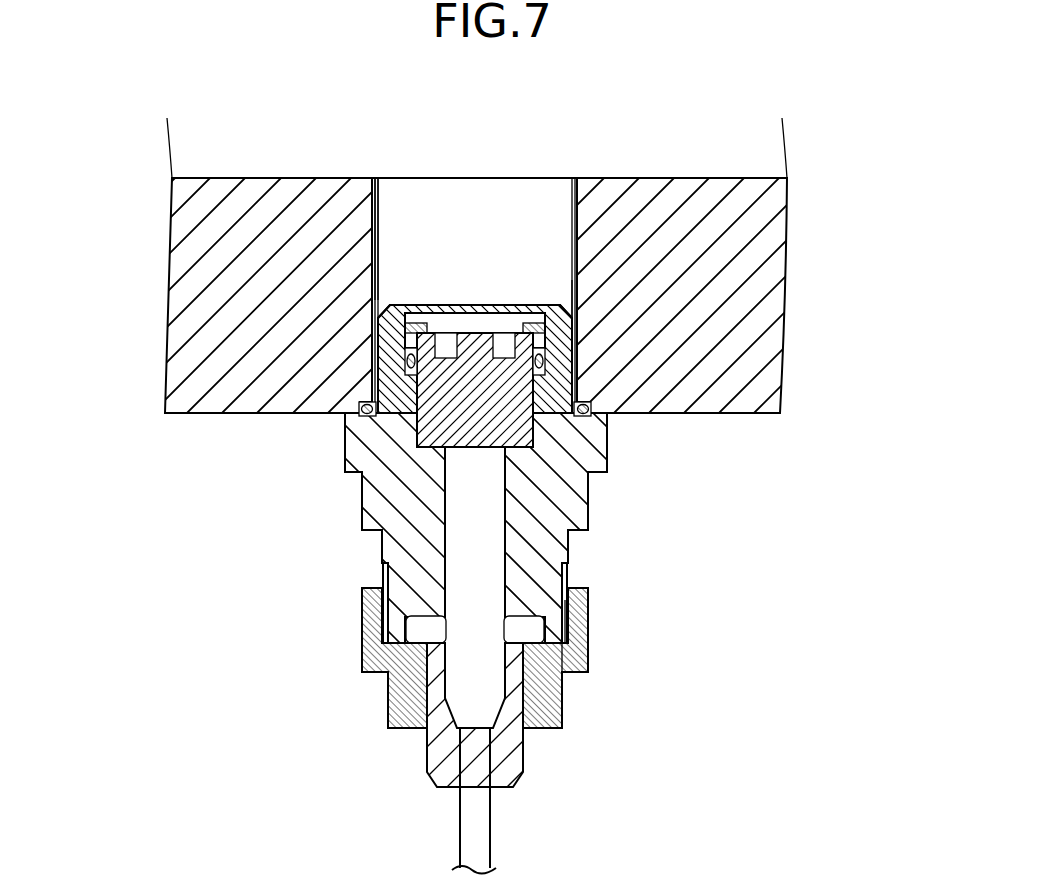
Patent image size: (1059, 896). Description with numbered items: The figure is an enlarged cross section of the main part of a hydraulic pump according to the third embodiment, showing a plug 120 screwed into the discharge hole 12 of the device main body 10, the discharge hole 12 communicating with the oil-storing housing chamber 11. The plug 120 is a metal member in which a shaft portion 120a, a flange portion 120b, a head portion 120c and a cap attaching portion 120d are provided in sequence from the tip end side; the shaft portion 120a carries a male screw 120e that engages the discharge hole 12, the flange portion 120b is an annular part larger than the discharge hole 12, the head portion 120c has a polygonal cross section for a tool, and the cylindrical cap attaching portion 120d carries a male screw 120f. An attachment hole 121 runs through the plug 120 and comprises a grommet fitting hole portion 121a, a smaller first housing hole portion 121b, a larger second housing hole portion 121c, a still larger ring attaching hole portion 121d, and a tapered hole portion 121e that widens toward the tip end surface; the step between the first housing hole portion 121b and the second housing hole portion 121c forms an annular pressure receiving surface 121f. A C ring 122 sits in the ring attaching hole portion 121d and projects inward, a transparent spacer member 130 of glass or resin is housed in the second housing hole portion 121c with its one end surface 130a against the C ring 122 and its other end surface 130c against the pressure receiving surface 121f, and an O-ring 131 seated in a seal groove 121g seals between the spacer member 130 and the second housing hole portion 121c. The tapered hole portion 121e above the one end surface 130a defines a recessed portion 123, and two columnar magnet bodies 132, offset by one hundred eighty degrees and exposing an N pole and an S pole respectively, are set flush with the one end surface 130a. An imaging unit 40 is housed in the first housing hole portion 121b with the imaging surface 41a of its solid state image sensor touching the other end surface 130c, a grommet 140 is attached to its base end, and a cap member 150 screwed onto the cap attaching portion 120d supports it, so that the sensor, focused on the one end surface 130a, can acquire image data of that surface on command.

The device main body 10 is at (767, 272).
The housing chamber 11 is at (762, 162).
The discharge hole 12 is at (572, 185).
The imaging unit 40 is at (483, 700).
The imaging surface 41a is at (478, 440).
The plug 120 is at (187, 440).
The shaft portion 120a is at (380, 361).
The flange portion 120b is at (347, 463).
The head portion 120c is at (372, 497).
The cap attaching portion 120d is at (392, 550).
The male screw 120e is at (378, 331).
The male screw 120f is at (383, 573).
The attachment hole 121 is at (703, 515).
The grommet fitting hole portion 121a is at (580, 663).
The first housing hole portion 121b is at (503, 616).
The second housing hole portion 121c is at (570, 553).
The ring attaching hole portion 121d is at (598, 433).
The tapered hole portion 121e is at (562, 284).
The pressure receiving surface 121f is at (440, 621).
The seal groove 121g is at (435, 410).
The C ring 122 is at (418, 323).
The recessed portion 123 is at (467, 327).
The spacer member 130 is at (428, 438).
The one end surface 130a is at (483, 312).
The other end surface 130c is at (473, 455).
The O-ring 131 is at (383, 392).
The magnet body 132 is at (443, 330).
The grommet 140 is at (435, 742).
The cap member 150 is at (553, 713).